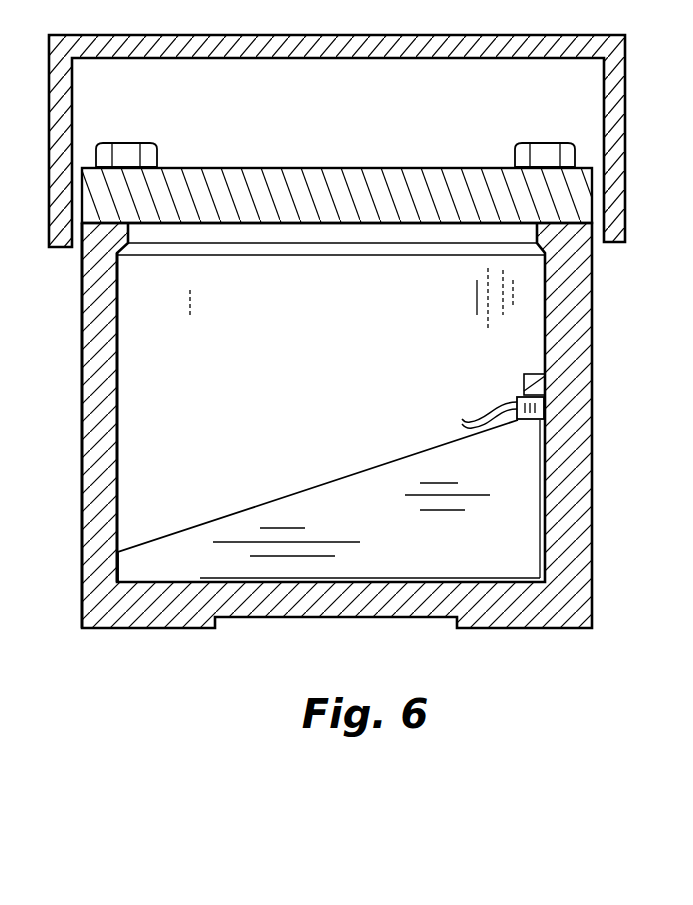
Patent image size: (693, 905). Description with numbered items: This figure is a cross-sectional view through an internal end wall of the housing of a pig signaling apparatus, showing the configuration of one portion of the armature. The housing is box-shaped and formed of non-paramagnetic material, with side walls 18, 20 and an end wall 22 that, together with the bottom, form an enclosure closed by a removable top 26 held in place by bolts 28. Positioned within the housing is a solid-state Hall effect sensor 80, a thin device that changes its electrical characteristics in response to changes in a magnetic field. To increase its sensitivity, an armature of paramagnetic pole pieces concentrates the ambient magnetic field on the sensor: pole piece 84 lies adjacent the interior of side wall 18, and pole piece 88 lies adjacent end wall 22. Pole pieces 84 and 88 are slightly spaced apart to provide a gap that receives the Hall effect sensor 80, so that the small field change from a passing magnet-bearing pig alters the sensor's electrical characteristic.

The side wall 18 is at (572, 333).
The side wall 20 is at (95, 443).
The end wall 22 is at (373, 362).
The removable top 26 is at (300, 190).
The bolts 28 is at (132, 153).
The Hall effect sensor 80 is at (541, 413).
The pole piece 84 is at (525, 378).
The pole piece 88 is at (337, 507).